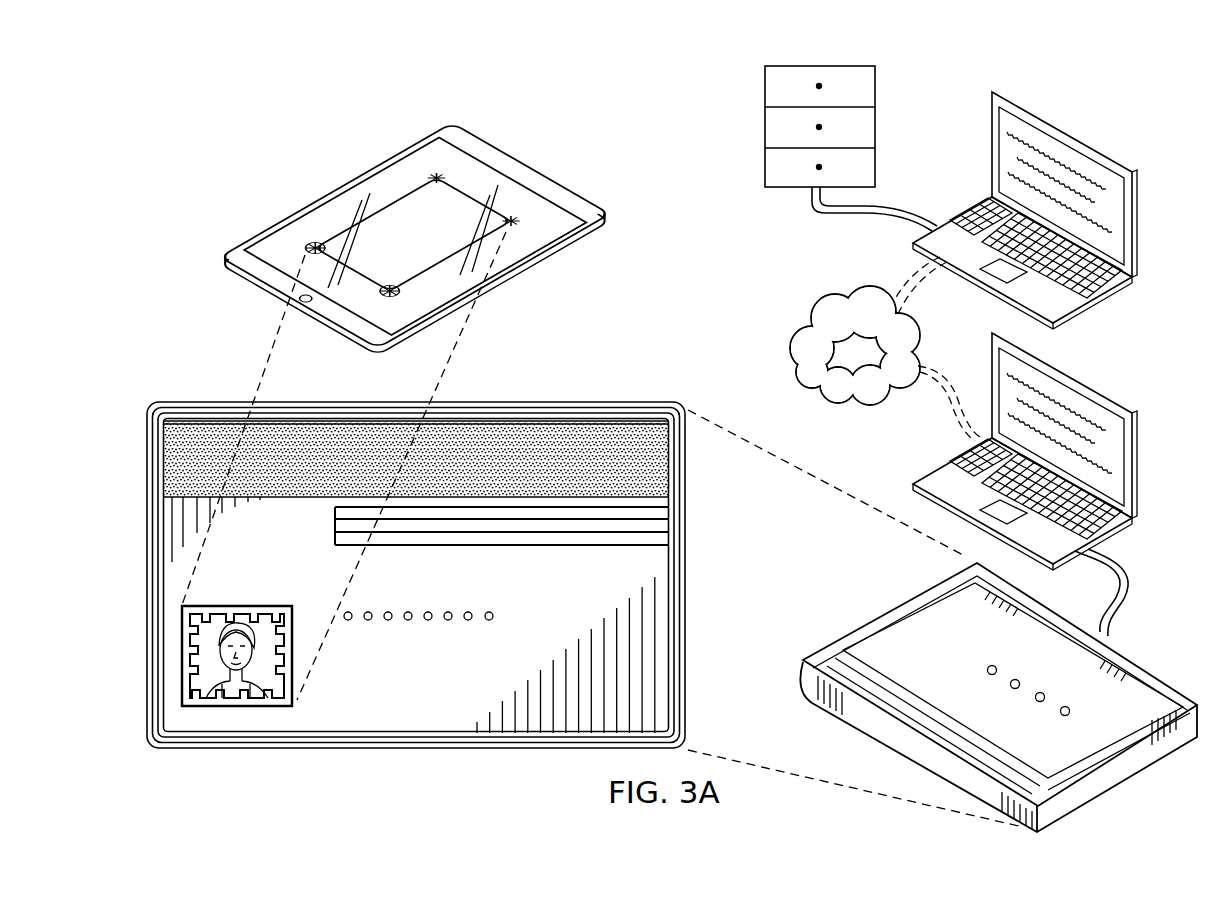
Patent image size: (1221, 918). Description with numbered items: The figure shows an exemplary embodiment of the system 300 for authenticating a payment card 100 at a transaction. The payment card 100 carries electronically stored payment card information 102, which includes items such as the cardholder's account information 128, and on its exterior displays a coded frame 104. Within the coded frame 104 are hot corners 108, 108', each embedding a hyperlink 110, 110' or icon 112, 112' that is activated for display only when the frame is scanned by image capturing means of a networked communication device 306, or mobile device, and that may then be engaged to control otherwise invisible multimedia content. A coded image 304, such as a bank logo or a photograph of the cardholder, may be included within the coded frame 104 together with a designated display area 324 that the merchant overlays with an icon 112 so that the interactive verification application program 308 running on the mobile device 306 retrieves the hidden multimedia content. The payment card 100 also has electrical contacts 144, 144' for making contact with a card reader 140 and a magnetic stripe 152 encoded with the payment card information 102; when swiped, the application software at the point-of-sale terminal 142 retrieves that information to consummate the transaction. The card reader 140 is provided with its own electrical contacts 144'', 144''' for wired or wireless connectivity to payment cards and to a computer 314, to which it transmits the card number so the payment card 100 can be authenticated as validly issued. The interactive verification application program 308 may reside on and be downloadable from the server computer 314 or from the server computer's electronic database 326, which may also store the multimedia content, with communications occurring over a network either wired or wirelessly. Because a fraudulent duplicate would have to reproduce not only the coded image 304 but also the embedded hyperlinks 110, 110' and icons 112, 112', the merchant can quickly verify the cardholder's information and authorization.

The payment card 100 is at (528, 772).
The payment card information 102 is at (840, 354).
The coded frame 104 is at (188, 707).
The hot corner 108 is at (268, 225).
The hot corner 108' is at (406, 335).
The hyperlink 110 is at (427, 231).
The hyperlink 110' is at (872, 330).
The icon 112 is at (456, 130).
The icon 112' is at (572, 191).
The cardholder's account information 128 is at (605, 402).
The card reader 140 is at (1132, 692).
The point-of-sale terminal 142 is at (1092, 386).
The electrical contact 144 is at (421, 707).
The electrical contact 144' is at (479, 707).
The electrical contact 144'' is at (1005, 697).
The electrical contact 144''' is at (1121, 766).
The magnetic stripe 152 is at (540, 440).
The system 300 is at (655, 124).
The coded image 304 is at (240, 698).
The networked communication device 306 is at (342, 154).
The interactive verification application program 308 is at (1085, 170).
The computer 314 is at (1056, 122).
The designated display area 324 is at (463, 200).
The electronic database 326 is at (877, 113).